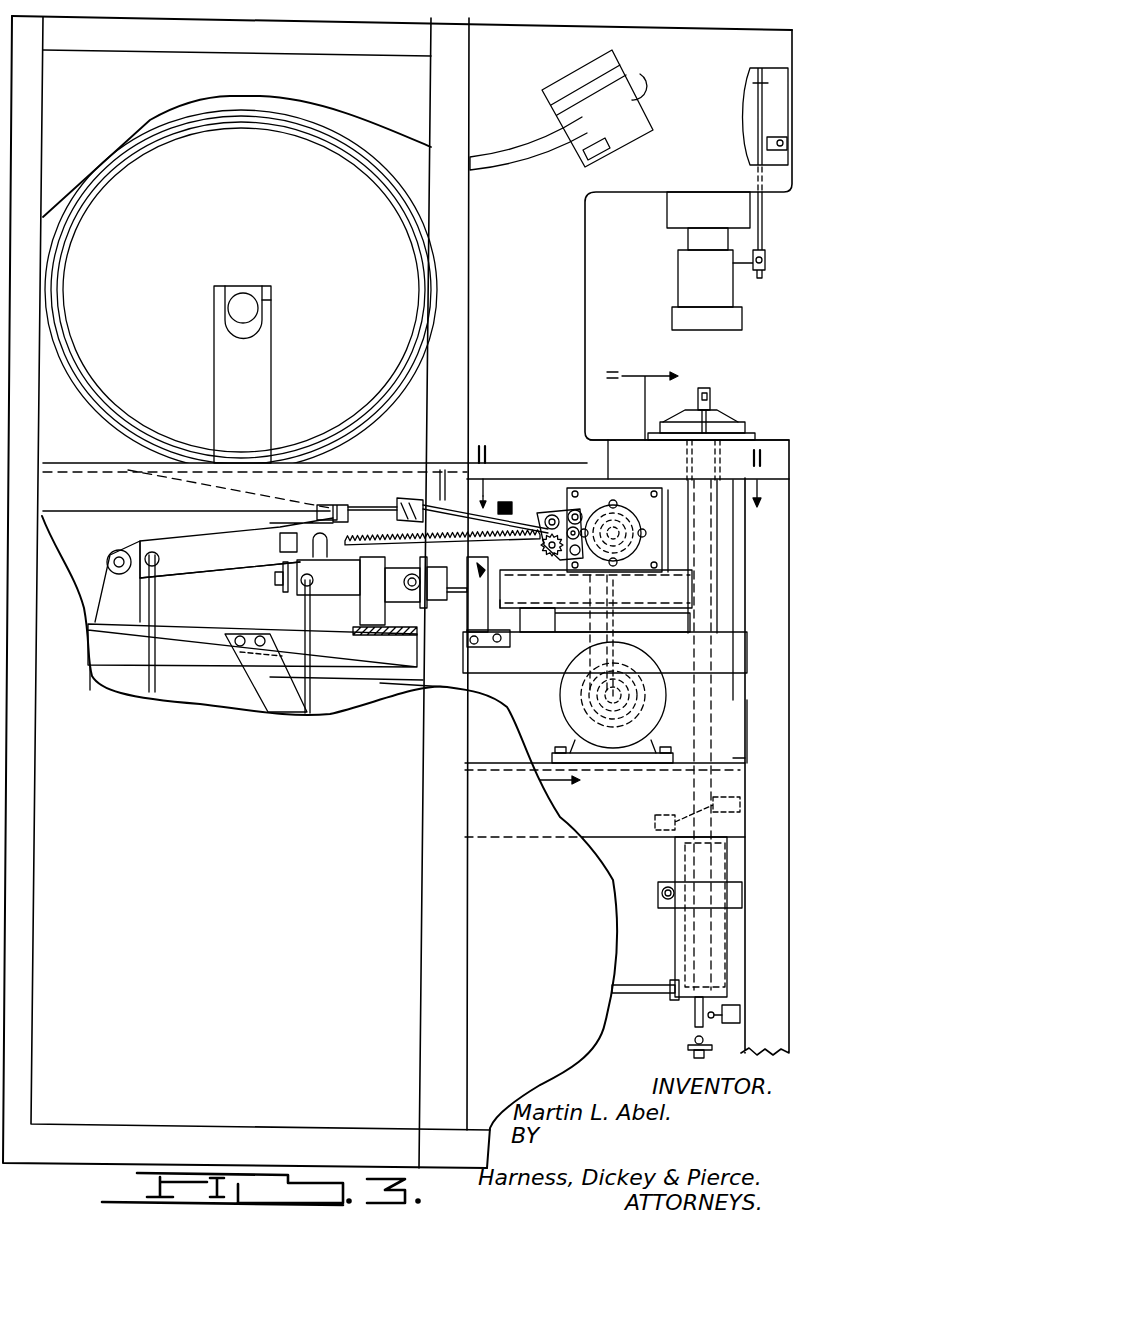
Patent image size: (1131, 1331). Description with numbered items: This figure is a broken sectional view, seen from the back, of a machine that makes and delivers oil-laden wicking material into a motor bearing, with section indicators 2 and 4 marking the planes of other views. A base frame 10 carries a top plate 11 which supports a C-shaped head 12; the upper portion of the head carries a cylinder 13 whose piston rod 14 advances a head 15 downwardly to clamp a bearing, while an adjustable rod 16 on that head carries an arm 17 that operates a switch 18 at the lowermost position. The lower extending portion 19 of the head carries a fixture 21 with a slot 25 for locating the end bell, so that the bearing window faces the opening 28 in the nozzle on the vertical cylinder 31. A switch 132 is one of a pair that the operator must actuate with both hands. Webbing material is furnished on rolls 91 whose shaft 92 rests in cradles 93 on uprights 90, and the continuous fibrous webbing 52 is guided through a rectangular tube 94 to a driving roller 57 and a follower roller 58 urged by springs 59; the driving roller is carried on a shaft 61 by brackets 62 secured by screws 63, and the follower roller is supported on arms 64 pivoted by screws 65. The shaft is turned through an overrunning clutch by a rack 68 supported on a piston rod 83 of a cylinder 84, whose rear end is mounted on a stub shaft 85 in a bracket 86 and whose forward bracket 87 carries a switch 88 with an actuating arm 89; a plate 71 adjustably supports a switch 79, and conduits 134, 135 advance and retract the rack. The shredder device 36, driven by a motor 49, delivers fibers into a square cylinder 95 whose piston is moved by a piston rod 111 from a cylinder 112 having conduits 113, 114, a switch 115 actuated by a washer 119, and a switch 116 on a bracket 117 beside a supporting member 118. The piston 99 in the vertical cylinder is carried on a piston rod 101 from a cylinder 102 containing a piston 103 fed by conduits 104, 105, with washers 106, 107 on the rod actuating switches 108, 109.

The rolls 91 is at (282, 118).
The uprights 90 is at (265, 361).
The shaft 92 is at (243, 296).
The cradles 93 is at (272, 290).
The switch 132 is at (560, 76).
The C-shaped head 12 is at (696, 64).
The arm 17 is at (772, 70).
The switch 18 is at (748, 131).
The cylinder 13 is at (668, 211).
The piston rod 14 is at (690, 242).
The head 15 is at (680, 289).
The adjustable rod 16 is at (767, 230).
The section line 4- 4 is at (609, 576).
The fixture 21 is at (740, 412).
The slot 25 is at (703, 388).
The opening 28 is at (720, 406).
The lower extending portion 19 is at (762, 440).
The cylinder 31 is at (712, 556).
The piston rod 101 is at (732, 715).
The base frame 10 is at (785, 590).
The section line 2- 2 is at (764, 505).
The device 36 is at (640, 488).
The screws 63 is at (616, 487).
The top plate 11 is at (586, 479).
The follower roller 58 is at (552, 514).
The roller arm 64 is at (571, 510).
The screws 65 is at (578, 527).
The springs 59 is at (537, 542).
The driving roller 57 is at (545, 555).
The switch 79 is at (507, 500).
The plate 71 is at (530, 500).
The fibrous webbing 52 is at (486, 477).
The rack 68 is at (408, 496).
The rectangular tube 94 is at (438, 468).
The switch 88 is at (344, 502).
The actuating arm 89 is at (370, 505).
The switch 116 is at (470, 545).
The brackets 62 is at (550, 560).
The shaft 61 is at (576, 560).
The square cylinder 95 is at (545, 720).
The bracket 118 is at (512, 670).
The motor 49 is at (640, 745).
The conduit 105 is at (660, 763).
The washer 107 is at (735, 763).
The switch 109 is at (742, 798).
The cylinder 102 is at (728, 850).
The switch 108 is at (738, 1005).
The piston 103 is at (768, 918).
The conduit 104 is at (646, 994).
The washer 106 is at (688, 1046).
The piston 99 is at (720, 603).
The cylinder 84 is at (185, 543).
The bracket 86 is at (112, 583).
The stub shaft 85 is at (150, 552).
The bracket 87 is at (325, 509).
The cylinder 112 is at (352, 634).
The conduit 135 is at (285, 713).
The conduit 134 is at (142, 685).
The piston rod 83 is at (360, 578).
The piston rod 111 is at (447, 620).
The conduit 114 is at (412, 591).
The switch 115 is at (280, 545).
The conduit 113 is at (316, 562).
The washer 119 is at (262, 608).
The bracket 117 is at (470, 698).